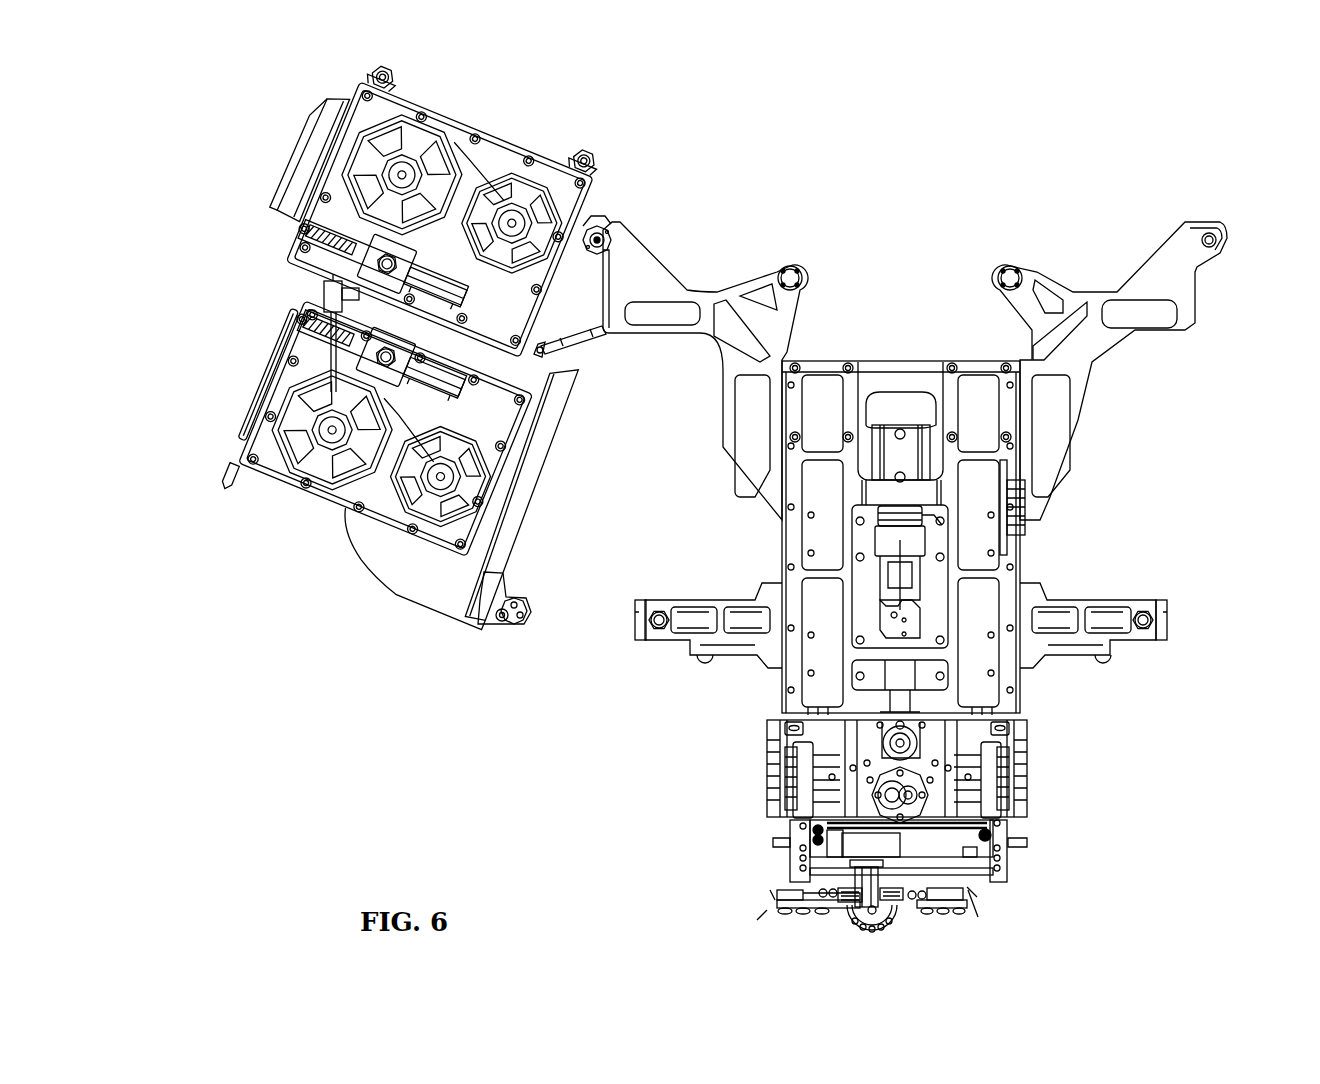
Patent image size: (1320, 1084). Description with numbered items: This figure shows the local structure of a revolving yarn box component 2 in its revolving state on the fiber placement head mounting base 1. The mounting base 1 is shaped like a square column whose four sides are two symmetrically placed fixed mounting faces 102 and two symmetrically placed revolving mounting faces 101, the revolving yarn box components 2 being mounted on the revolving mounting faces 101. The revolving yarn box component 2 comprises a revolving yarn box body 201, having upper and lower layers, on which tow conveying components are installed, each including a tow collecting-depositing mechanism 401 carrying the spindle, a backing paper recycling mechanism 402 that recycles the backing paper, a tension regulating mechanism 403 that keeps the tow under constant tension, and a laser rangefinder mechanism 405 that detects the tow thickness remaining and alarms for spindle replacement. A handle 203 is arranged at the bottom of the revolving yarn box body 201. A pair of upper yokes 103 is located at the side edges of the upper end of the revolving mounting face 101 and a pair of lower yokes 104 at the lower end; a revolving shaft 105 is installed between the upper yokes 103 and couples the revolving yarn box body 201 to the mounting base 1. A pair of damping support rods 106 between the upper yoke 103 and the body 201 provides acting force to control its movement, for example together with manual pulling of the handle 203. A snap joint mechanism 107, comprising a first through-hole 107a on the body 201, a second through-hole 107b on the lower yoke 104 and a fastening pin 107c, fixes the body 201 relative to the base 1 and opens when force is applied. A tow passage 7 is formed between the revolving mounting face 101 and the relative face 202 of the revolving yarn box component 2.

The fiber placement head mounting base 1 is at (857, 581).
The revolving yarn box component 2 is at (257, 150).
The tow passage 7 is at (692, 417).
The revolving mounting face 101 is at (780, 540).
The fixed mounting face 102 is at (1015, 581).
The upper yoke 103 is at (705, 297).
The lower yoke 104 is at (755, 637).
The revolving shaft 105 is at (603, 220).
The damping support rod 106 is at (608, 340).
The snap joint mechanism 107 is at (697, 705).
The first through-hole 107a is at (500, 620).
The second through-hole 107b is at (658, 632).
The fastening pin 107c is at (645, 630).
The revolving yarn box body 201 is at (420, 578).
The relative face 202 is at (547, 453).
The handle 203 is at (243, 495).
The tow collecting-depositing mechanism 401 is at (267, 395).
The backing paper recycling mechanism 402 is at (487, 513).
The tension regulating mechanism 403 is at (323, 348).
The laser rangefinder mechanism 405 is at (328, 295).